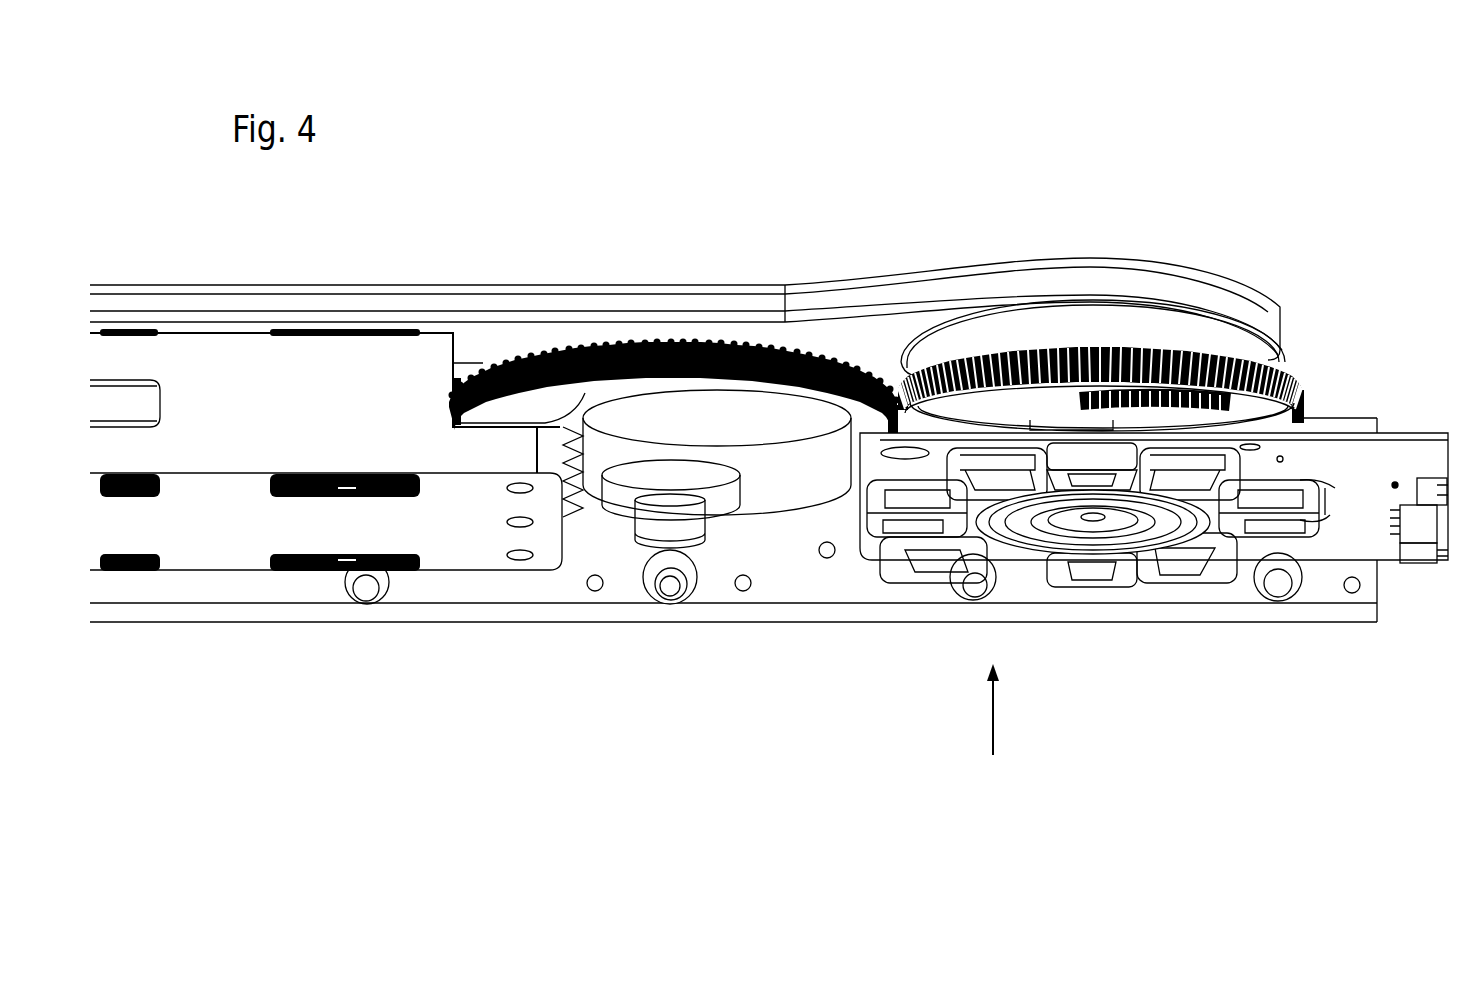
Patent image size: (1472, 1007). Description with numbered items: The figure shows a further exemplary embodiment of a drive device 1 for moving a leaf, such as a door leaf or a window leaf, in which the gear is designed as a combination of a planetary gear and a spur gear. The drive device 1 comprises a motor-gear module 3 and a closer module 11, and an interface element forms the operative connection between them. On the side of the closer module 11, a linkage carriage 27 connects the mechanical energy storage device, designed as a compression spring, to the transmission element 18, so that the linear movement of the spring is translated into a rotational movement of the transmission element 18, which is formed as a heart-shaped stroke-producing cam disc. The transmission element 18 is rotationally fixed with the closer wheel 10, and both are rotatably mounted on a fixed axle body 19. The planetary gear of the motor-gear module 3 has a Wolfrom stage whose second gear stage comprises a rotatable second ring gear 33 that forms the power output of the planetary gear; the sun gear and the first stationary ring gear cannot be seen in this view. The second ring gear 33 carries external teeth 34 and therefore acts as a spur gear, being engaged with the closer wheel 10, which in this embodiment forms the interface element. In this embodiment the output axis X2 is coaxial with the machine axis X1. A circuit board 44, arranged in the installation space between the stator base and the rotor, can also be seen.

The drive device 1 is at (509, 233).
The motor-gear module 3 is at (995, 745).
The closer wheel 10 is at (623, 380).
The closer module 11 is at (470, 655).
The transmission element 18 is at (758, 500).
The axle body 19 is at (669, 537).
The linkage carriage 27 is at (253, 527).
The second ring gear 33 is at (1128, 350).
The external teeth 34 is at (1290, 390).
The circuit board 44 is at (1380, 482).
The machine axis X1 is at (1093, 608).
The output axis X2 is at (1093, 735).